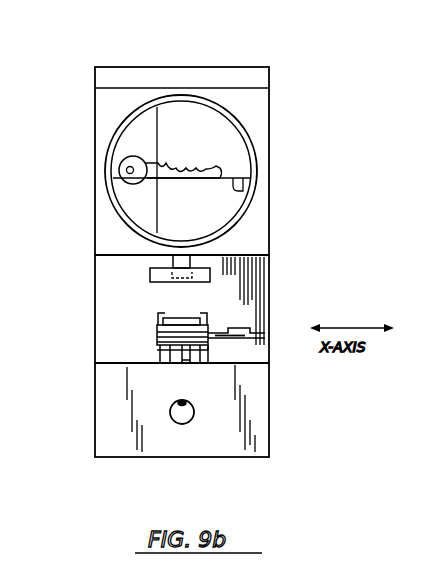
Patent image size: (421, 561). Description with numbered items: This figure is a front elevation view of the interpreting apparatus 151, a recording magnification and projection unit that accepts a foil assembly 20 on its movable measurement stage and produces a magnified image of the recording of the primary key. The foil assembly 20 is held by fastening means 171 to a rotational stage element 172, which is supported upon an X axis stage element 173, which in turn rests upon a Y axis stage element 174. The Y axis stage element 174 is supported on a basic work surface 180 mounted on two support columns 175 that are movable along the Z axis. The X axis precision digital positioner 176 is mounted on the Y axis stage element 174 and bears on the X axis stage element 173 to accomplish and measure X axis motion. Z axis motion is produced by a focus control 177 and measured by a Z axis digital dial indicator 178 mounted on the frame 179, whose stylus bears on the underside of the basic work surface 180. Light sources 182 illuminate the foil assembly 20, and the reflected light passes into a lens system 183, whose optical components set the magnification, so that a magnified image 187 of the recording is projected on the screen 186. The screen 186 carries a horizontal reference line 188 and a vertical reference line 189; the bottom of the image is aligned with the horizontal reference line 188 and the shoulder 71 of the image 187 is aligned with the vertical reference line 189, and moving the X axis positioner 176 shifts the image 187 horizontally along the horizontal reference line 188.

The key reading assembly 151 is at (174, 52).
The vertical reference line 189 is at (153, 128).
The magnified image 187 is at (122, 155).
The shoulder 71 is at (160, 165).
The screen 186 is at (232, 141).
The horizontal reference line 188 is at (244, 186).
The lens system 183 is at (192, 260).
The light sources 182 is at (150, 273).
The foil assembly 20 is at (177, 312).
The fastening means 171 is at (210, 312).
The rotational stage element 172 is at (157, 321).
The X axis stage element 173 is at (157, 334).
The Y axis stage element 174 is at (158, 345).
The support columns 175 is at (162, 358).
The X axis precision digital positioner 176 is at (252, 336).
The basic work surface 180 is at (208, 348).
The focus control 177 is at (188, 413).
The Z axis digital dial indicator 178 is at (180, 363).
The frame 179 is at (96, 443).